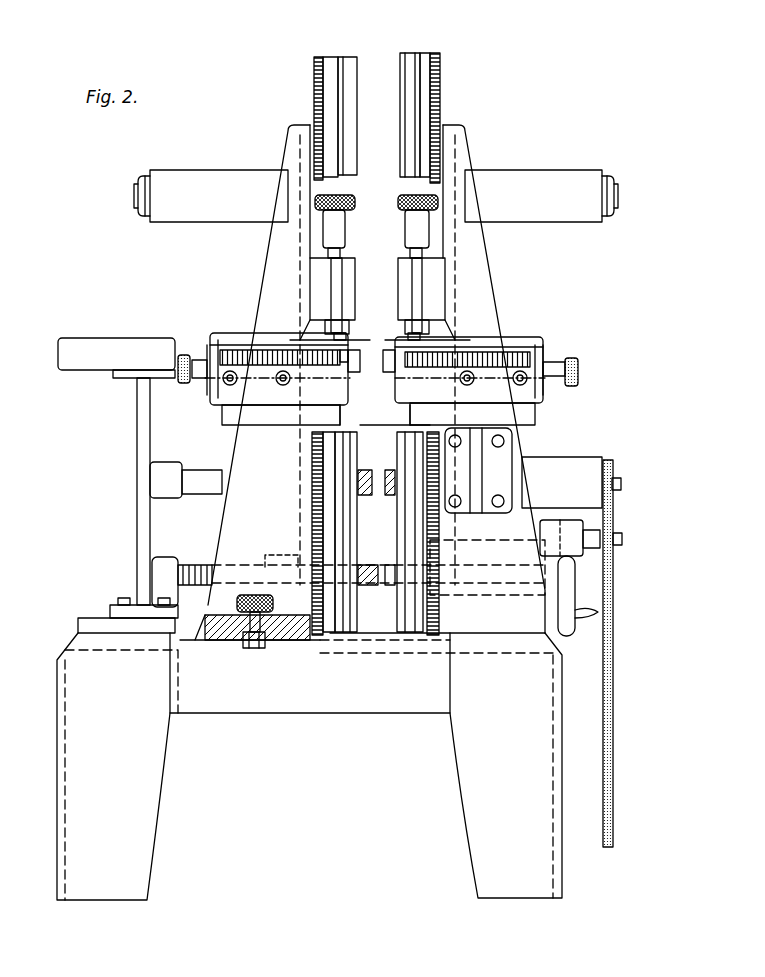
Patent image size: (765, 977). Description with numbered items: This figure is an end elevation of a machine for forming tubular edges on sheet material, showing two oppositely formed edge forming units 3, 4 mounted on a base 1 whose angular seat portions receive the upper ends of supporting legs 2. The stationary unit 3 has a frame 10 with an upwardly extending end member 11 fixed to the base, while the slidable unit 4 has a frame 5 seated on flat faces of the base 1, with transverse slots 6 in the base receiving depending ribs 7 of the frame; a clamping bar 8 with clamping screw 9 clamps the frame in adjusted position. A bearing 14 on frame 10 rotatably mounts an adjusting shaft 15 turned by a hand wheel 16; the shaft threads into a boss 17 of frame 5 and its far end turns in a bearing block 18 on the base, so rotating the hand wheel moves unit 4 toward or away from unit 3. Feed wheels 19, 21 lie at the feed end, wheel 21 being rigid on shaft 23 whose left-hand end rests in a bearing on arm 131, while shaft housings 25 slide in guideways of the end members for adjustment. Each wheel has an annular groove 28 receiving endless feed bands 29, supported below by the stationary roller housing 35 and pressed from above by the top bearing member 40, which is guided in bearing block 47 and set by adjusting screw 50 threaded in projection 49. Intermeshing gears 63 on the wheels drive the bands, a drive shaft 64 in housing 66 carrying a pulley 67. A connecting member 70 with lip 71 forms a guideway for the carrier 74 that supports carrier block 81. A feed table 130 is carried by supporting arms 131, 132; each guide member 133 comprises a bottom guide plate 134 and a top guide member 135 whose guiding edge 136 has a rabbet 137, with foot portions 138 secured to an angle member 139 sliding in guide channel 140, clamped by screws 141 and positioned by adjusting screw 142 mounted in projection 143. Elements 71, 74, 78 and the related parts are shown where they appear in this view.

The base 1 is at (288, 710).
The supporting legs 2 is at (160, 782).
The tubular edge forming unit 3 is at (468, 145).
The tubular edge forming unit 4 is at (290, 135).
The frame 5 is at (262, 248).
The transverse slots 6 is at (200, 640).
The transverse ribs 7 is at (205, 640).
The clamping bar 8 is at (252, 650).
The clamping screw 9 is at (246, 595).
The frame 10 is at (486, 262).
The end member 11 is at (505, 280).
The bearing 14 is at (510, 560).
The adjusting shaft 15 is at (364, 586).
The hand wheel 16 is at (574, 600).
The boss 17 is at (378, 556).
The bearing block 18 is at (158, 566).
The wheel 19 is at (330, 60).
The wheel 21 is at (330, 638).
The shaft 23 is at (390, 496).
The shaft housing 25 is at (192, 180).
The annular groove 28 is at (410, 58).
The endless feed bands 29 is at (410, 76).
The roller housing 35 is at (370, 380).
The top bearing member 40 is at (343, 284).
The bearing block 47 is at (318, 278).
The projection 49 is at (406, 232).
The adjusting screw 50 is at (400, 198).
The gears 63 is at (318, 57).
The drive shaft 64 is at (622, 538).
The housing 66 is at (552, 520).
The pulley 67 is at (612, 508).
The connecting member 70 is at (226, 422).
The lip 71 is at (356, 414).
The carrier 74 is at (395, 437).
The web 78 is at (393, 415).
The carrier block 81 is at (410, 318).
The feed table 130 is at (68, 346).
The supporting arm 131 is at (137, 466).
The supporting arm 132 is at (480, 455).
The guide member 133 is at (298, 345).
The bottom guide plate 134 is at (495, 340).
The top guide member 135 is at (485, 345).
The guiding edge 136 is at (408, 336).
The rabbet 137 is at (430, 340).
The foot portions 138 is at (236, 333).
The angle member 139 is at (222, 340).
The guide channel 140 is at (207, 348).
The guide and retaining screws 141 is at (226, 386).
The adjusting screw 142 is at (182, 384).
The projection 143 is at (196, 380).